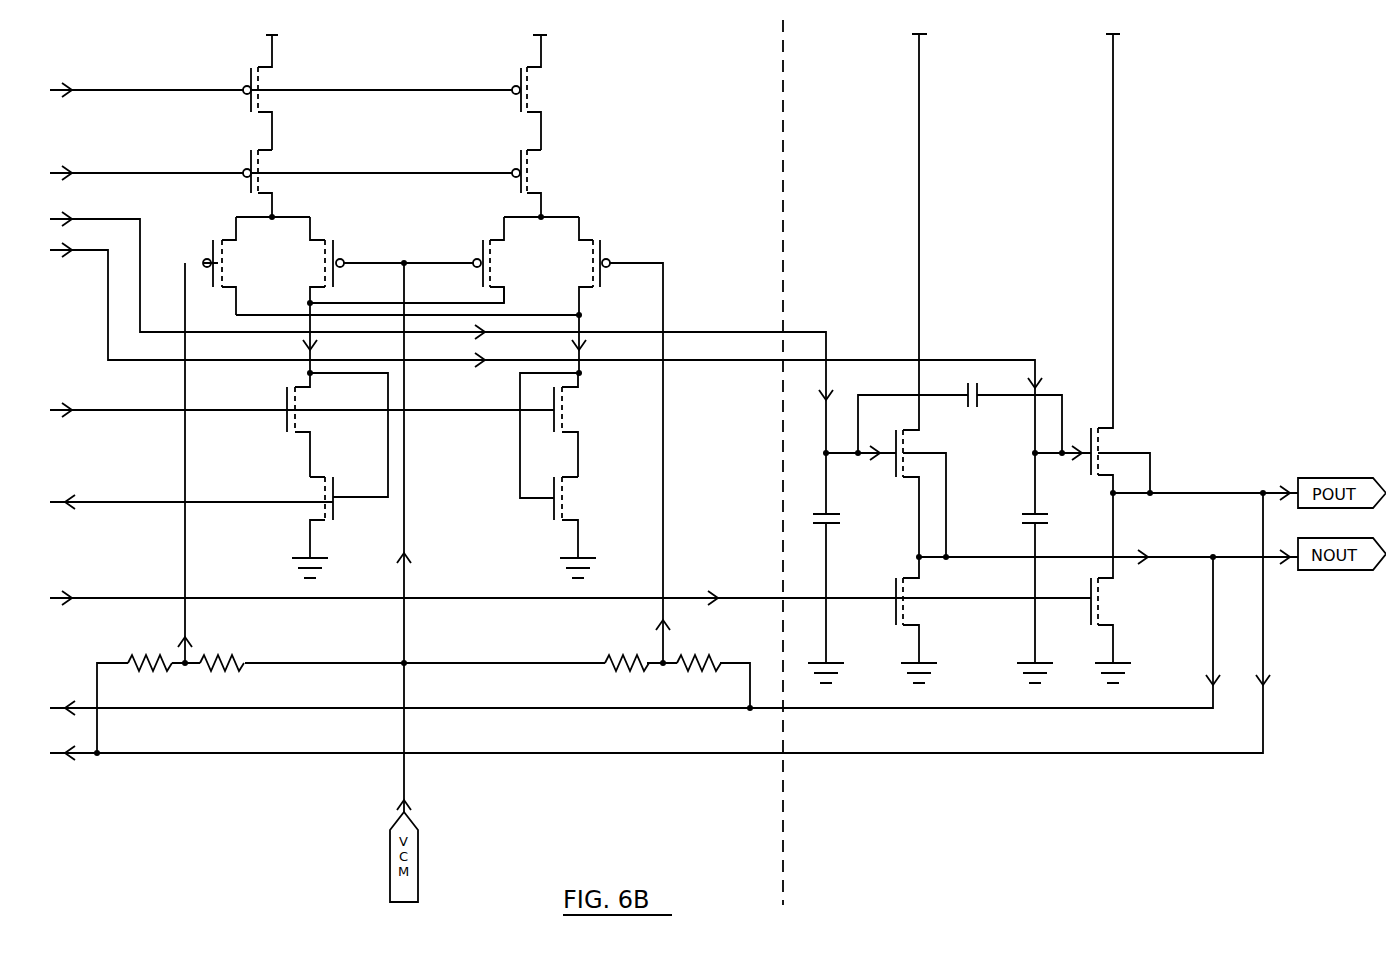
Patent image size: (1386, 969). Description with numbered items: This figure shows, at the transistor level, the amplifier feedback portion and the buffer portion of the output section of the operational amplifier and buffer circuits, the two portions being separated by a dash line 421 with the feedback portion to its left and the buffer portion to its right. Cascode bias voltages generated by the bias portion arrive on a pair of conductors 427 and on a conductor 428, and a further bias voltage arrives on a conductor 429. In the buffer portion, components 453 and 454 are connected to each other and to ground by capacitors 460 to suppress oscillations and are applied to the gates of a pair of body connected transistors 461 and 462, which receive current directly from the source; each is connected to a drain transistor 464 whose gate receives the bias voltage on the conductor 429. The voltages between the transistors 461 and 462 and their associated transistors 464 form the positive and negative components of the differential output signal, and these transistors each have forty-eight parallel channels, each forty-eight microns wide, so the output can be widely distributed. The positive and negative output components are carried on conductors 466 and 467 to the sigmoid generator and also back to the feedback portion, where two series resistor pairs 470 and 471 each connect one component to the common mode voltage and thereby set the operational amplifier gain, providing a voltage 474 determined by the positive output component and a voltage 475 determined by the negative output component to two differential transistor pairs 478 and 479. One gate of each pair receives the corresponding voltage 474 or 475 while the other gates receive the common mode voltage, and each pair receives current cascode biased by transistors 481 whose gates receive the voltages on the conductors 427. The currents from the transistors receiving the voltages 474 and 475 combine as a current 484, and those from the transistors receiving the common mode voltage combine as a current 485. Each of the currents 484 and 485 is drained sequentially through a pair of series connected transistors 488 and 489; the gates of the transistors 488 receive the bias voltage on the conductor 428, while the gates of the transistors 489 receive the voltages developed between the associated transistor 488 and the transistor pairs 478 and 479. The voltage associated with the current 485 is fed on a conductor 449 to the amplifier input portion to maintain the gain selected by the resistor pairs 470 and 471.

The dash line 421 is at (783, 63).
The pair of conductors 427 is at (72, 95).
The conductor 428 is at (75, 410).
The conductor 429 is at (75, 598).
The conductor 449 is at (75, 502).
The component 453 is at (108, 219).
The component 454 is at (72, 252).
The capacitor 460 is at (835, 527).
The body connected transistor 461 is at (893, 468).
The body connected transistor 462 is at (1093, 458).
The drain transistor 464 is at (893, 618).
The conductor 466 is at (203, 753).
The conductor 467 is at (215, 708).
The series resistor pair 470 is at (160, 660).
The series resistor pair 471 is at (230, 660).
The voltage 474 is at (187, 390).
The voltage 475 is at (665, 288).
The differential transistor pair 478 is at (224, 233).
The differential transistor pair 479 is at (592, 233).
The transistor 481 is at (248, 153).
The current 484 is at (583, 348).
The current 485 is at (315, 352).
The transistor 488 is at (286, 425).
The transistor 489 is at (333, 515).